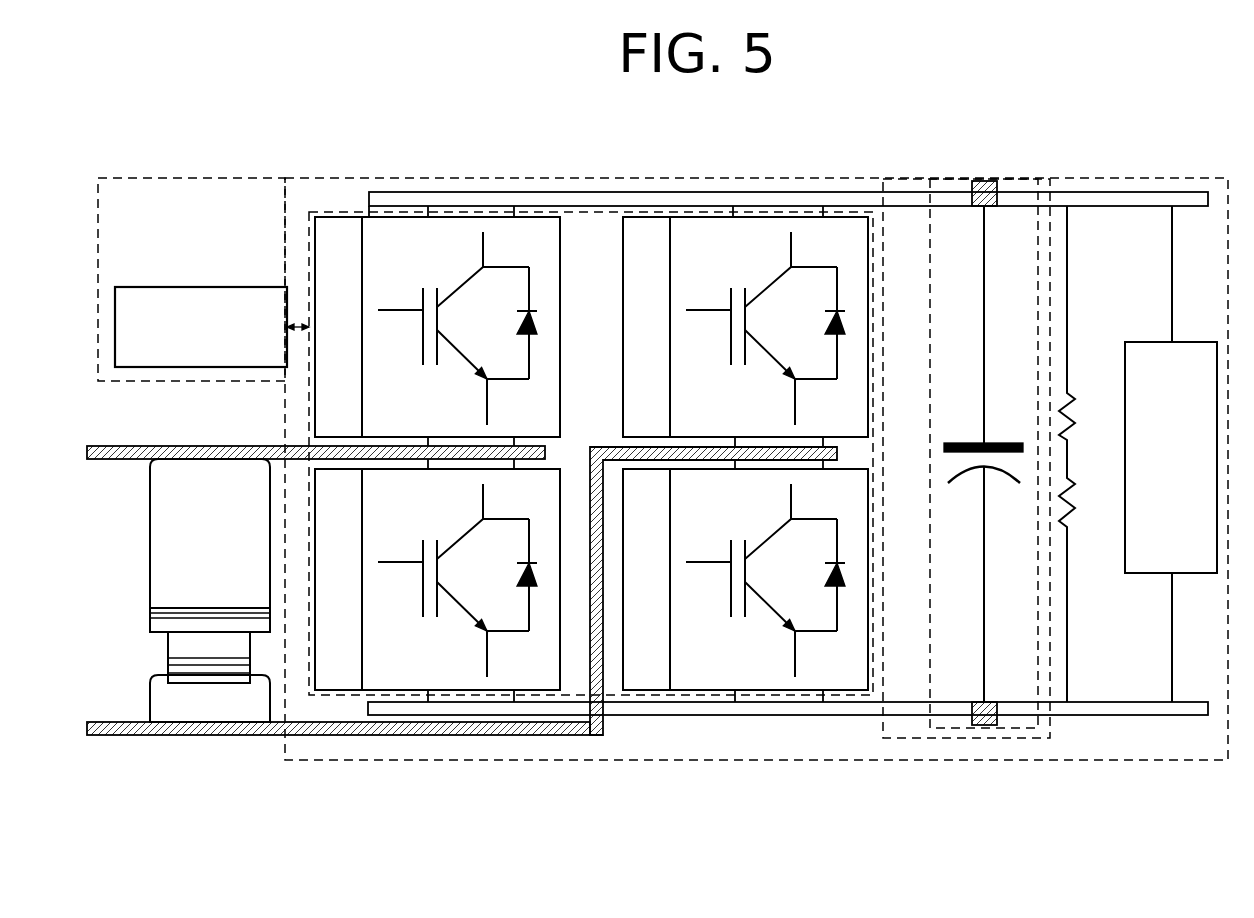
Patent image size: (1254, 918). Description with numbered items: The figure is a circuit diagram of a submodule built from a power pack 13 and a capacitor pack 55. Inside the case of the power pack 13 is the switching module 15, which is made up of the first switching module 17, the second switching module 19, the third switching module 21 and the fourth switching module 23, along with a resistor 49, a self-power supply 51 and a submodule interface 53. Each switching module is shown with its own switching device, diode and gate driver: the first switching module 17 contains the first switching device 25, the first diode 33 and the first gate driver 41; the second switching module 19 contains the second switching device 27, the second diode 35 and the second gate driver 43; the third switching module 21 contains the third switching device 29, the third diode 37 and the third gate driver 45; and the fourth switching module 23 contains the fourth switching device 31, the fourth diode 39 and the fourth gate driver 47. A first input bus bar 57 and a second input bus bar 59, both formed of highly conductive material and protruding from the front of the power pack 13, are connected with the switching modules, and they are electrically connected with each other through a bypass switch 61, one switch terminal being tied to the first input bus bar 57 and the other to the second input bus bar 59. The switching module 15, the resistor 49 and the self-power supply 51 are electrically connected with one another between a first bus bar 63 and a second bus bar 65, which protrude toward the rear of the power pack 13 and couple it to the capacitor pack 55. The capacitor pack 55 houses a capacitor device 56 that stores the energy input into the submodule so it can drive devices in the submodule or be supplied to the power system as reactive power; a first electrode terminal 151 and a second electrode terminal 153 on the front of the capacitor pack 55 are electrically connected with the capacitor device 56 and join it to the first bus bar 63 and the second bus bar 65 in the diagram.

The power pack 13 is at (193, 178).
The switching module 15 is at (326, 212).
The first switching module 17 is at (421, 283).
The second switching module 19 is at (745, 280).
The third switching module 21 is at (562, 480).
The fourth switching module 23 is at (885, 487).
The first switching device 25 is at (451, 328).
The second switching device 27 is at (759, 328).
The third switching device 29 is at (452, 580).
The fourth switching device 31 is at (760, 580).
The first diode 33 is at (537, 326).
The second diode 35 is at (845, 326).
The third diode 37 is at (537, 578).
The fourth diode 39 is at (845, 578).
The first gate driver 41 is at (312, 327).
The second gate driver 43 is at (649, 286).
The third gate driver 45 is at (346, 635).
The fourth gate driver 47 is at (654, 635).
The resistor 49 is at (1072, 523).
The self-power supply 51 is at (1192, 347).
The submodule interface 53 is at (151, 295).
The capacitor pack 55 is at (958, 179).
The capacitor device 56 is at (1004, 443).
The first input bus bar 57 is at (103, 446).
The second input bus bar 59 is at (103, 722).
The bypass switch 61 is at (160, 564).
The first bus bar 63 is at (1121, 193).
The second bus bar 65 is at (1121, 715).
The first electrode terminal 151 is at (985, 181).
The second electrode terminal 153 is at (985, 725).